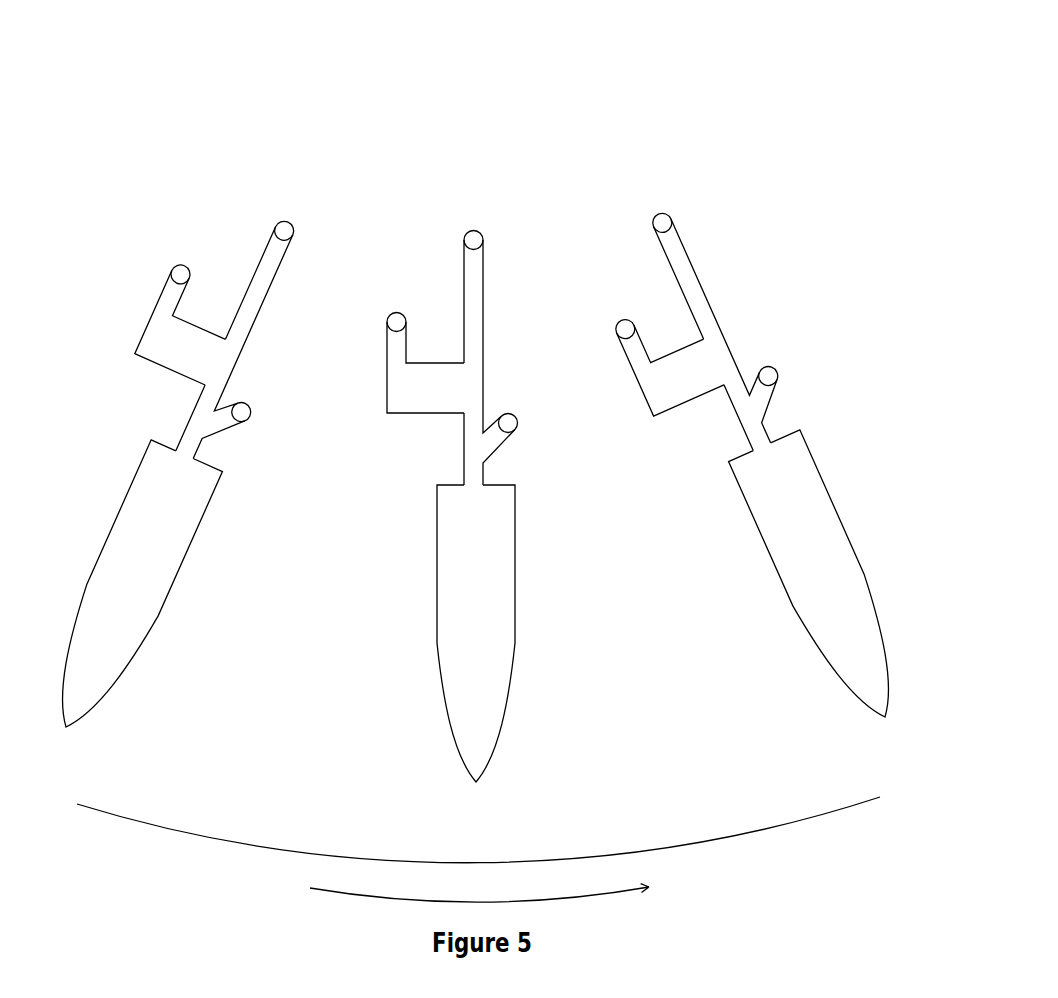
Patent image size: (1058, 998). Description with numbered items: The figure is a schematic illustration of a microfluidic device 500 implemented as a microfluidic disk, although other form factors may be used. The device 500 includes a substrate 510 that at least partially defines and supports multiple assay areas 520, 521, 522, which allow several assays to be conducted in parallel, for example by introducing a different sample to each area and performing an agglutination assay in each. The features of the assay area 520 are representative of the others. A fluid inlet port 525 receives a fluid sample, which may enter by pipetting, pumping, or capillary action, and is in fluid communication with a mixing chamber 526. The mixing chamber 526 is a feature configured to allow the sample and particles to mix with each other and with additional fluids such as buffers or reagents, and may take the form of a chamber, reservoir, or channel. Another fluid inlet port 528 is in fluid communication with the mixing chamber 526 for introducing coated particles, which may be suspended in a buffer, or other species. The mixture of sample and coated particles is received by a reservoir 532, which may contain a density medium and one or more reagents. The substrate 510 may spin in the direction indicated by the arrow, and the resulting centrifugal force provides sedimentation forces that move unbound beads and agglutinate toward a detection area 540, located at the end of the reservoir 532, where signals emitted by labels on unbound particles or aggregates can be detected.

The microfluidic device 500 is at (679, 41).
The substrate 510 is at (700, 841).
The assay area 520 is at (451, 470).
The assay area 521 is at (784, 174).
The assay area 522 is at (136, 174).
The fluid inlet port 525 is at (482, 238).
The mixing chamber 526 is at (387, 387).
The fluid inlet port 528 is at (405, 316).
The reservoir 532 is at (515, 577).
The detection area 540 is at (494, 792).